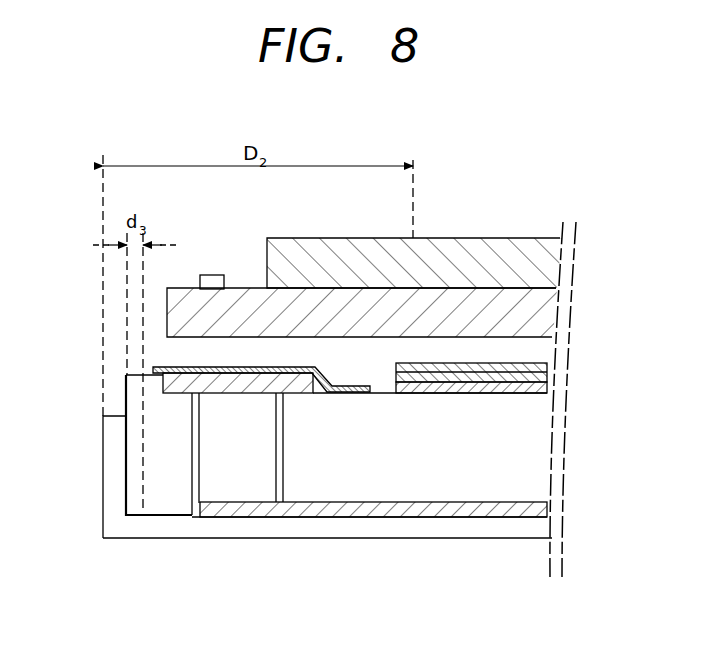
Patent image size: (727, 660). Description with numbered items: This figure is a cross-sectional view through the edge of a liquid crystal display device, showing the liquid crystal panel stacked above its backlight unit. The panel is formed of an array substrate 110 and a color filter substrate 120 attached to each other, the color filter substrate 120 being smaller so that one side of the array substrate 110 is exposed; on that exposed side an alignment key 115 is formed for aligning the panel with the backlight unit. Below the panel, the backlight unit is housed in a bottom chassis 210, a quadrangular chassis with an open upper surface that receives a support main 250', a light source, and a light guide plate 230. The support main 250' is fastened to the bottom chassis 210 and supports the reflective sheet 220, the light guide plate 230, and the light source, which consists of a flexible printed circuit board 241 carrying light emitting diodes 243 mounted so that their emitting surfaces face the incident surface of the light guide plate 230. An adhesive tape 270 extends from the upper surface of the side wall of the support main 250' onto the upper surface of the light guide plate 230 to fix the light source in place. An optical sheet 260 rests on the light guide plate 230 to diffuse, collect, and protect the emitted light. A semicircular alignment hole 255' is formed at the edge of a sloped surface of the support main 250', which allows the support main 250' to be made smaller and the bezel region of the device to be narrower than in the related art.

The array substrate 110 is at (535, 312).
The alignment key 115 is at (212, 275).
The color filter substrate 120 is at (540, 262).
The bottom chassis 210 is at (288, 527).
The reflective sheet 220 is at (337, 512).
The light guide plate 230 is at (463, 483).
The flexible printed circuit board 241 is at (165, 388).
The light emitting diode 243 is at (239, 487).
The support main 250' is at (147, 490).
The alignment hole 255' is at (79, 447).
The optical sheet 260 is at (567, 355).
The adhesive tape 270 is at (192, 367).